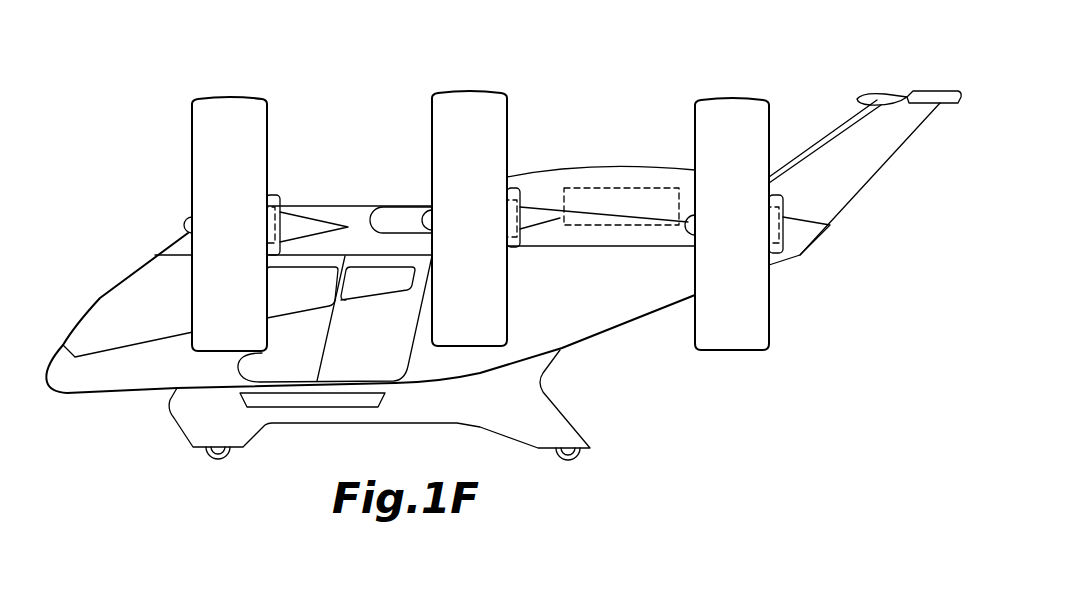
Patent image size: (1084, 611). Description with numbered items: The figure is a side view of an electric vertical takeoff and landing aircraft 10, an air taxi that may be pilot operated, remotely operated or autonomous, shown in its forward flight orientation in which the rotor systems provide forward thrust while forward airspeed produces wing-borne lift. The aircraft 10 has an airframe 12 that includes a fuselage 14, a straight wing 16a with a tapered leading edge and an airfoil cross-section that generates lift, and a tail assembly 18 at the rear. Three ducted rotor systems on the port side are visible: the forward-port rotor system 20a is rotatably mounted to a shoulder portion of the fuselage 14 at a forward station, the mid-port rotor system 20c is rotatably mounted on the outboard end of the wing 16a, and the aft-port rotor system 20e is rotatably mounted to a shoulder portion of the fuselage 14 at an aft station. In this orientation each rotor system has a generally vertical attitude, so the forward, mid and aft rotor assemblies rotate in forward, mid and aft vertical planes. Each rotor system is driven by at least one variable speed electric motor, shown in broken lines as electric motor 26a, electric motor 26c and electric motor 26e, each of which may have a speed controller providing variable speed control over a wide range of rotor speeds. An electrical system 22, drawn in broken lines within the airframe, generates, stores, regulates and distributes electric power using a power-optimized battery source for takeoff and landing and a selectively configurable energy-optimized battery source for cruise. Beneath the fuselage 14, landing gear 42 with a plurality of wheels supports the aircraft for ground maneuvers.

The aircraft 10 is at (602, 77).
The airframe 12 is at (82, 392).
The fuselage 14 is at (98, 392).
The wing 16a is at (387, 217).
The tail assembly 18 is at (878, 152).
The forward-port rotor system 20a is at (232, 107).
The mid-port rotor system 20c is at (470, 100).
The aft-port rotor system 20e is at (733, 108).
The electrical system 22 is at (627, 190).
The variable speed electric motor 26a is at (258, 208).
The variable speed electric motor 26c is at (489, 198).
The variable speed electric motor 26e is at (760, 208).
The landing gear 42 is at (555, 422).